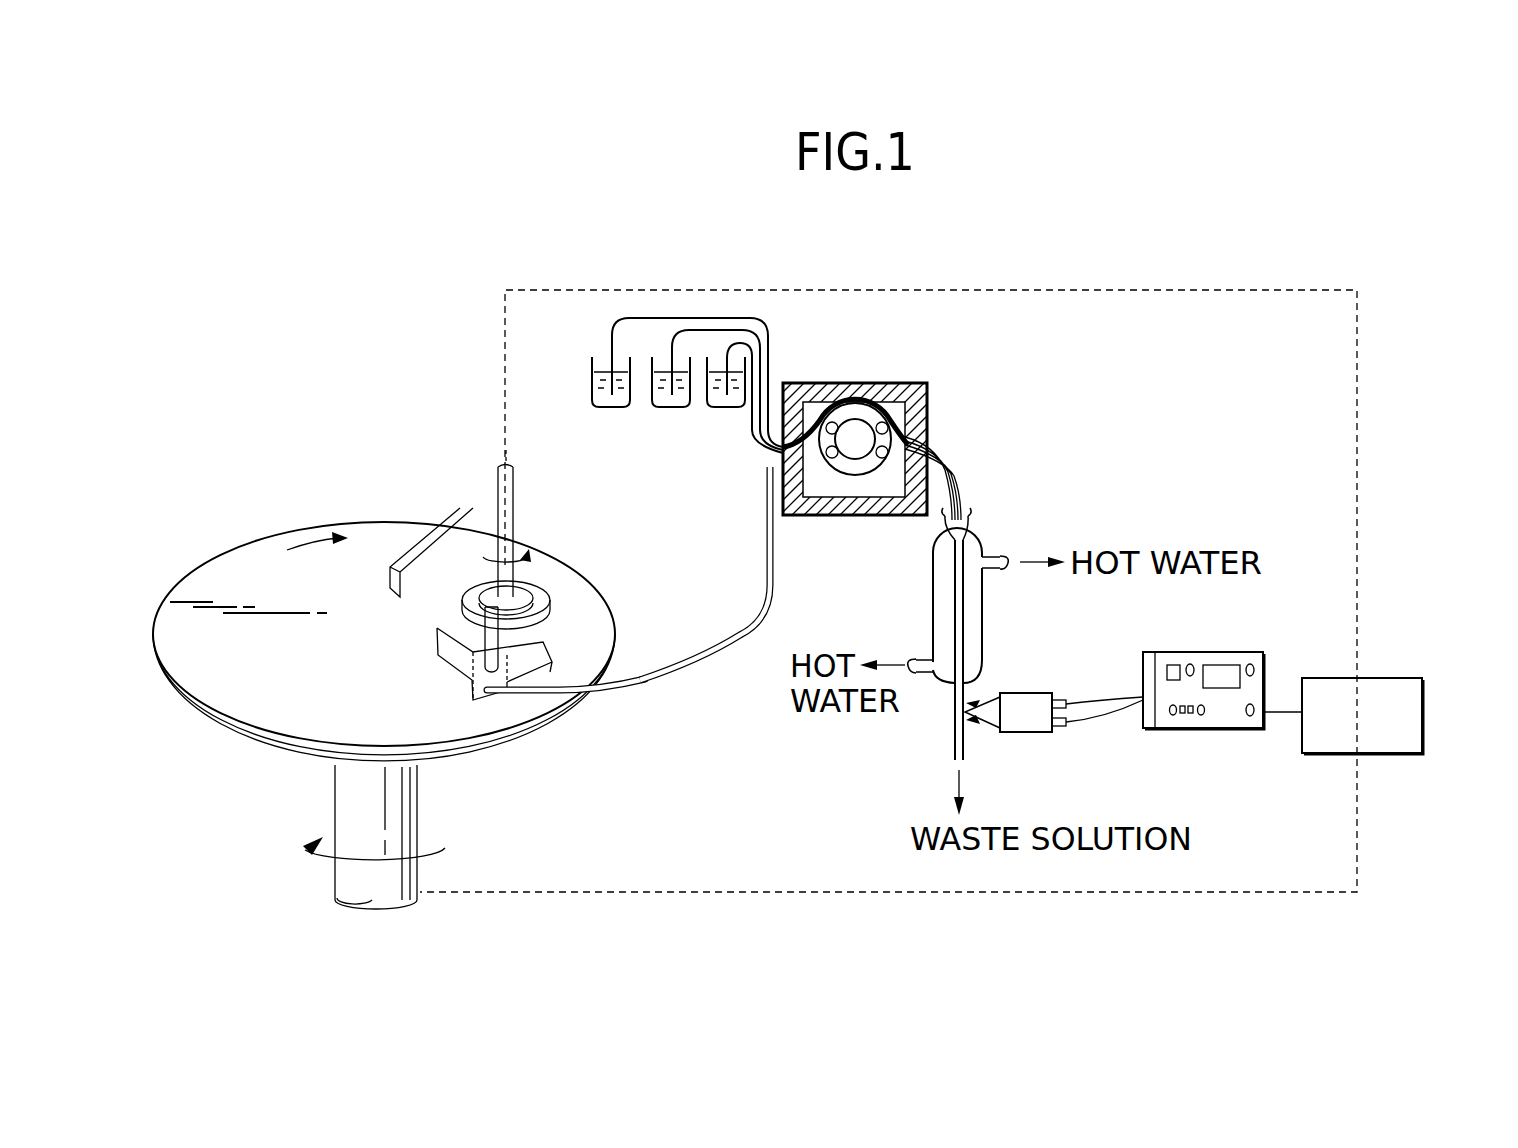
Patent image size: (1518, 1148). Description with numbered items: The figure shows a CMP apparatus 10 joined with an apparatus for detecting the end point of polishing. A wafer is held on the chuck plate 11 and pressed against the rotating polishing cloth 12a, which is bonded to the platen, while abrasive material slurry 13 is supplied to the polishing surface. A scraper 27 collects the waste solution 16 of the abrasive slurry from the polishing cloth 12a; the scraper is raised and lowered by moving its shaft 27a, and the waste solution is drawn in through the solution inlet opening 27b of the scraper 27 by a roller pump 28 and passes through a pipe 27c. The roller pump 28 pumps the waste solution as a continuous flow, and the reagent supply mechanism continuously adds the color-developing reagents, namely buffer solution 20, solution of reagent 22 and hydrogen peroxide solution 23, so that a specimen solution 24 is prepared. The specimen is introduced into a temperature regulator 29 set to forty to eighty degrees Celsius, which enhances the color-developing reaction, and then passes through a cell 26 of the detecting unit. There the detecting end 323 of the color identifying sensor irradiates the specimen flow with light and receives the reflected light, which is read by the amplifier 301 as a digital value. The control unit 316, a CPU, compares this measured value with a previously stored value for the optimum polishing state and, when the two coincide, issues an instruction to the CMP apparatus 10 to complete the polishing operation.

The CMP apparatus 10 is at (248, 484).
The chuck plate 11 is at (533, 582).
The polishing cloth 12a is at (597, 630).
The abrasive material slurry 13 is at (418, 547).
The waste solution 16 is at (690, 672).
The buffer solution 20 is at (606, 412).
The solution of reagent 22 is at (663, 412).
The hydrogen peroxide solution 23 is at (717, 412).
The specimen solution 24 is at (965, 612).
The cell 26 is at (960, 724).
The scraper 27 is at (482, 641).
The shaft 27a is at (442, 650).
The solution inlet opening 27b is at (500, 636).
The pipe 27c is at (617, 696).
The roller pump 28 is at (928, 405).
The temperature regulator 29 is at (933, 572).
The amplifier 301 is at (1218, 652).
The control unit 316 is at (1385, 678).
The detecting end 323 is at (1035, 700).